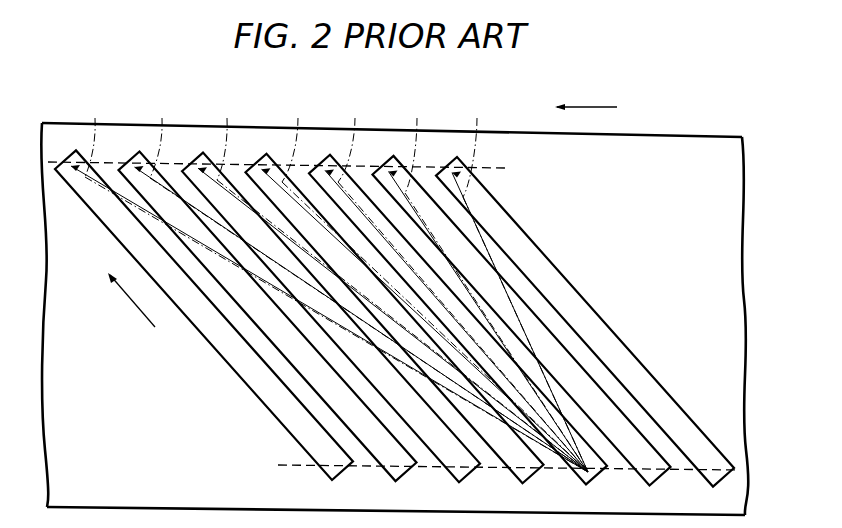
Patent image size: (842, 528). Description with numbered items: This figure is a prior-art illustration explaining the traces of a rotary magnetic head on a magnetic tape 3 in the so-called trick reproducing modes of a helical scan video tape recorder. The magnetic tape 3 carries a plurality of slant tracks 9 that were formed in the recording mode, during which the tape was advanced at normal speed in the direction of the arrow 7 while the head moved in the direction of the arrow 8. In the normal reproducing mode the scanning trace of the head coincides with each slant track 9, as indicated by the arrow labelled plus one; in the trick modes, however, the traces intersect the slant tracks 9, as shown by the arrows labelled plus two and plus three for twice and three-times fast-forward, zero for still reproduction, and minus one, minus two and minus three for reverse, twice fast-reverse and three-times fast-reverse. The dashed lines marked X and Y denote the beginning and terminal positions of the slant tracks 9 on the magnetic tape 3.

The magnetic tape 3 is at (697, 142).
The arrow 7 is at (585, 107).
The arrow 8 is at (128, 298).
The slant tracks 9 is at (293, 355).